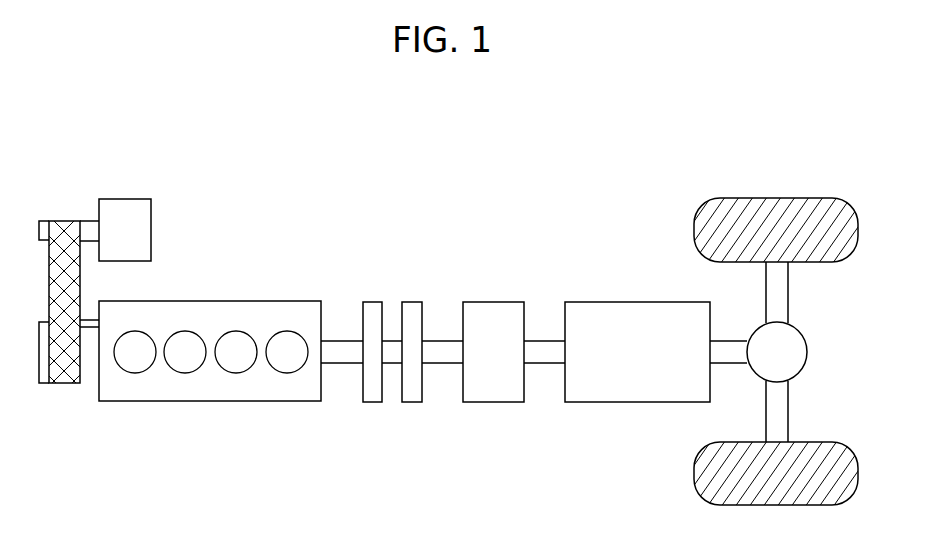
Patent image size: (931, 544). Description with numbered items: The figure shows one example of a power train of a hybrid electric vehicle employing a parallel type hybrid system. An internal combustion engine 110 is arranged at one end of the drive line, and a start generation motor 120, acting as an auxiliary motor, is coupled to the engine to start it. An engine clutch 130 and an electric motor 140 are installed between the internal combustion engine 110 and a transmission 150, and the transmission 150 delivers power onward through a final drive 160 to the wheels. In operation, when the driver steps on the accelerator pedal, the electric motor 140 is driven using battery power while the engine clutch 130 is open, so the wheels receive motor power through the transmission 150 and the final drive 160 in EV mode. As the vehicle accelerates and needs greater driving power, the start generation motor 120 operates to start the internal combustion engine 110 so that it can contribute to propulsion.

The internal combustion engine 110 is at (279, 301).
The start generation motor 120 is at (152, 212).
The engine clutch 130 is at (417, 302).
The electric motor 140 is at (505, 302).
The transmission 150 is at (667, 302).
The final drive 160 is at (805, 328).